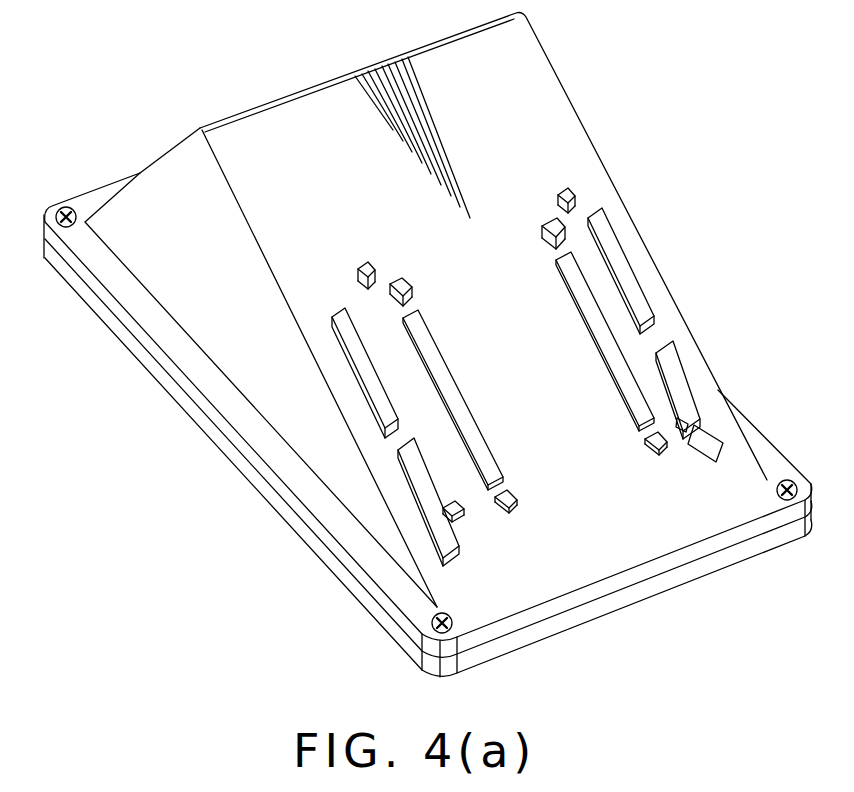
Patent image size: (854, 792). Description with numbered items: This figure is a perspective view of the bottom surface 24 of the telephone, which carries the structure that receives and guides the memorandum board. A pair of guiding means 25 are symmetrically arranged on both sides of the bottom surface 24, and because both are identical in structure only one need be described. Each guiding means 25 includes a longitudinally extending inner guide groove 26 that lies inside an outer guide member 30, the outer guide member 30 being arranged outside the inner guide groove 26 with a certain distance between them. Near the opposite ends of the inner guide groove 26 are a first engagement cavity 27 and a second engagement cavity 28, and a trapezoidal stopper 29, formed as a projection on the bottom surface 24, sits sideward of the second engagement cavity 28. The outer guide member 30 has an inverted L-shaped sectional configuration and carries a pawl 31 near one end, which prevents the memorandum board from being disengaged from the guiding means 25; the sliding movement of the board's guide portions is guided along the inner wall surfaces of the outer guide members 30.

The bottom surface 24 is at (350, 87).
The guiding means 25 is at (327, 345).
The inner guide groove 26 is at (447, 378).
The first engagement cavity 27 is at (510, 511).
The second engagement cavity 28 is at (404, 280).
The trapezoidal stopper 29 is at (366, 261).
The outer guide member 30 is at (357, 373).
The pawl 31 is at (465, 507).